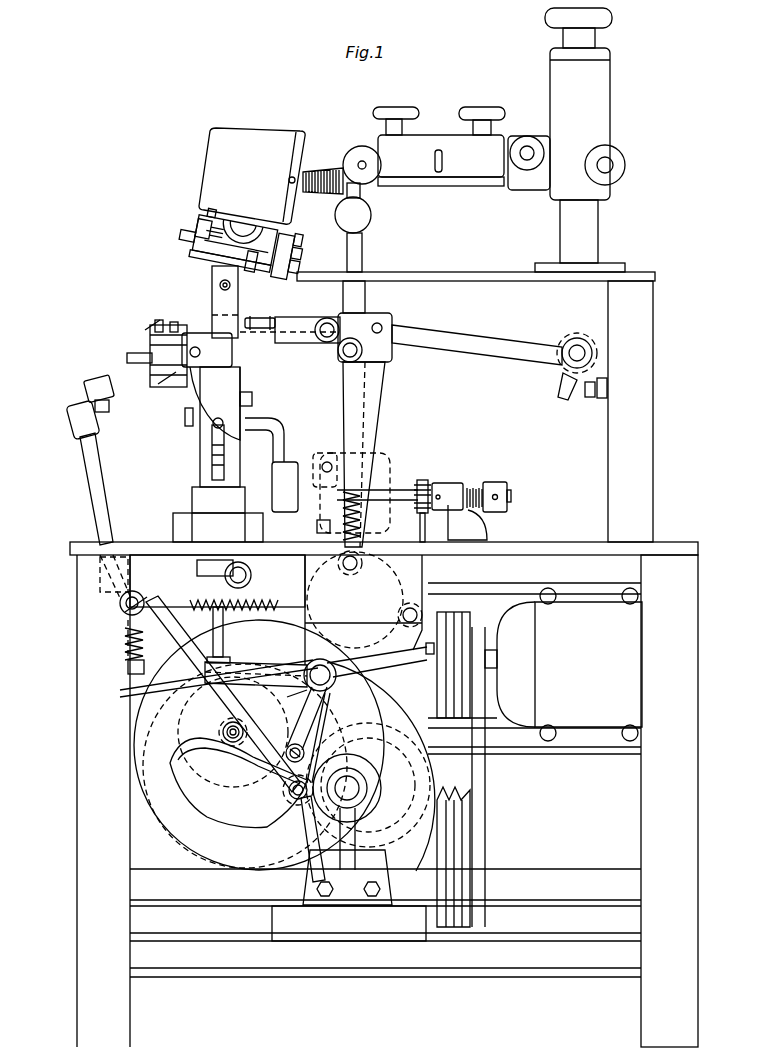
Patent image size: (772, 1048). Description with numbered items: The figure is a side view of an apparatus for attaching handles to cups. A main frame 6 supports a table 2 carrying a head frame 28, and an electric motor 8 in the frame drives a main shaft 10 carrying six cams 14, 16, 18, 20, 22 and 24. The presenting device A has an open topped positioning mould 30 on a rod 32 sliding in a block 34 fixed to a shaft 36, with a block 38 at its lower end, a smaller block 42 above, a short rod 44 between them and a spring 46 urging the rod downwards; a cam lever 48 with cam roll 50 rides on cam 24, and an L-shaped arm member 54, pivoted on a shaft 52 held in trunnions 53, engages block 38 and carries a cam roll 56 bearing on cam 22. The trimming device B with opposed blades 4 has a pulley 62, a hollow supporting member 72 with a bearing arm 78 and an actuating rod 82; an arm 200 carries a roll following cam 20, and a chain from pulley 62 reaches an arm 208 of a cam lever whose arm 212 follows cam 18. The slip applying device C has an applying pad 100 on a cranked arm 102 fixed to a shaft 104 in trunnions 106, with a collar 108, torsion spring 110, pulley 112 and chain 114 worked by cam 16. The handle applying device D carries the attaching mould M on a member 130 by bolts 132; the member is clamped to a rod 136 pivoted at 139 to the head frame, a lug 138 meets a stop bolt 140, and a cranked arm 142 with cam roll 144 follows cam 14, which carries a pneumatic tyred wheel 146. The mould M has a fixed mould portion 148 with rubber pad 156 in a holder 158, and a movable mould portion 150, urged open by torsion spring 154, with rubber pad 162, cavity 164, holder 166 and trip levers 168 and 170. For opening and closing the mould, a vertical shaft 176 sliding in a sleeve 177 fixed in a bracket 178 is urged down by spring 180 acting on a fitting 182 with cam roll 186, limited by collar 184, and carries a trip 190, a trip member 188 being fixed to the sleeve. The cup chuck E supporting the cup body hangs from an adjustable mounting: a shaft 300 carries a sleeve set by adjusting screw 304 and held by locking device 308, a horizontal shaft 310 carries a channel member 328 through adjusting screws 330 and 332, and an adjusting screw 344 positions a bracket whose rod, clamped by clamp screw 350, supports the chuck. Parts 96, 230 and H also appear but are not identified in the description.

The table top 2 is at (690, 541).
The leg 6 is at (688, 838).
The motor 8 is at (563, 664).
The crank 10 is at (341, 796).
The flywheel 14 is at (392, 701).
The roller pin 16 is at (290, 798).
The pulley 18 is at (405, 749).
The eccentric 20 is at (353, 735).
The connecting rod 22 is at (310, 830).
The bracket 24 is at (392, 880).
The upright 28 is at (640, 490).
The handle 30 is at (86, 385).
The lever arm 32 is at (90, 479).
The pivot 34 is at (120, 603).
The link 36 is at (118, 611).
The block 38 is at (128, 668).
The bracket 42 is at (100, 585).
The rod 44 is at (125, 663).
The spring 46 is at (122, 642).
The cam disc 48 is at (190, 700).
The roller 50 is at (289, 790).
The pivot 52 is at (335, 665).
The gear housing 53 is at (428, 577).
The lever 54 is at (125, 700).
The roller 56 is at (300, 748).
The bracket 62 is at (197, 579).
The plunger 72 is at (205, 459).
The belt 78 is at (405, 749).
The rod 82 is at (212, 621).
The bar 96 is at (240, 671).
The fitting 100 is at (252, 401).
The pipe 102 is at (256, 423).
The shaft 104 is at (400, 490).
The bearing 106 is at (478, 473).
The block 108 is at (498, 482).
The bracket 110 is at (470, 522).
The gear 112 is at (428, 486).
The collar 114 is at (420, 522).
The column 130 is at (212, 297).
The bolt 132 is at (220, 286).
The bar 136 is at (248, 318).
The lever 138 is at (560, 385).
The hub 139 is at (582, 340).
The stop 140 is at (590, 398).
The arm 142 is at (368, 400).
The spring 144 is at (190, 600).
The cam lobe 146 is at (155, 786).
The clamp 148 is at (196, 226).
The jaw 150 is at (190, 252).
The bolt 154 is at (280, 272).
The plate 156 is at (205, 236).
The screw 158 is at (205, 216).
The block 162 is at (208, 260).
The cup 164 is at (245, 224).
The base plate 166 is at (262, 276).
The clamp 168 is at (292, 266).
The screw 170 is at (303, 243).
The guide 176 is at (303, 256).
The post 177 is at (366, 300).
The housing 178 is at (380, 470).
The spring 180 is at (362, 538).
The bearing 182 is at (360, 566).
The beam 184 is at (366, 275).
The gear 186 is at (355, 600).
The link 188 is at (295, 317).
The knob 190 is at (300, 236).
The link 200 is at (308, 702).
The stop 208 is at (428, 656).
The rod 212 is at (332, 701).
The link 230 is at (196, 393).
The column 300 is at (598, 240).
The knob 304 is at (614, 16).
The wheel 308 is at (626, 166).
The joint 310 is at (505, 188).
The arm 328 is at (420, 178).
The knob 330 is at (487, 108).
The knob 332 is at (413, 108).
The wheel 344 is at (355, 147).
The wheel 350 is at (364, 233).
The section line 4 is at (150, 342).
The handle assembly A is at (62, 404).
The cutter head B is at (128, 346).
The stop C is at (178, 426).
The clamp assembly D is at (153, 311).
The housing E is at (286, 126).
The rod H is at (118, 362).
The mechanism M is at (167, 270).